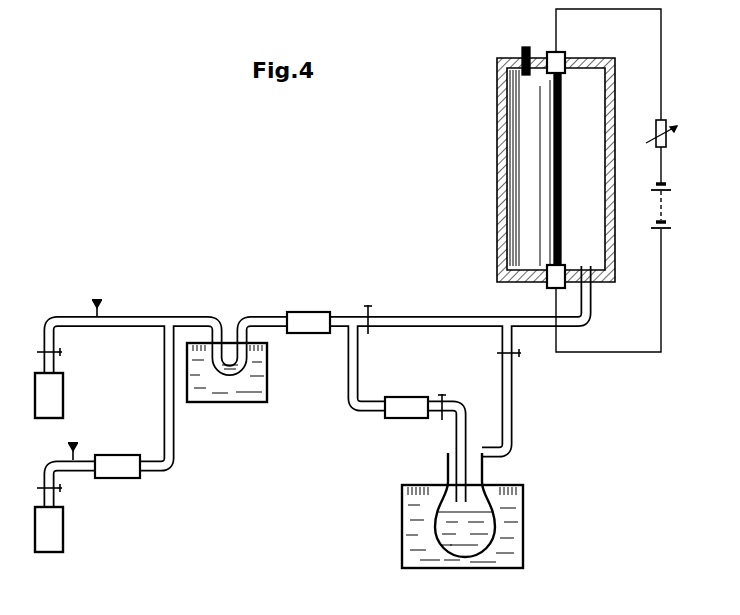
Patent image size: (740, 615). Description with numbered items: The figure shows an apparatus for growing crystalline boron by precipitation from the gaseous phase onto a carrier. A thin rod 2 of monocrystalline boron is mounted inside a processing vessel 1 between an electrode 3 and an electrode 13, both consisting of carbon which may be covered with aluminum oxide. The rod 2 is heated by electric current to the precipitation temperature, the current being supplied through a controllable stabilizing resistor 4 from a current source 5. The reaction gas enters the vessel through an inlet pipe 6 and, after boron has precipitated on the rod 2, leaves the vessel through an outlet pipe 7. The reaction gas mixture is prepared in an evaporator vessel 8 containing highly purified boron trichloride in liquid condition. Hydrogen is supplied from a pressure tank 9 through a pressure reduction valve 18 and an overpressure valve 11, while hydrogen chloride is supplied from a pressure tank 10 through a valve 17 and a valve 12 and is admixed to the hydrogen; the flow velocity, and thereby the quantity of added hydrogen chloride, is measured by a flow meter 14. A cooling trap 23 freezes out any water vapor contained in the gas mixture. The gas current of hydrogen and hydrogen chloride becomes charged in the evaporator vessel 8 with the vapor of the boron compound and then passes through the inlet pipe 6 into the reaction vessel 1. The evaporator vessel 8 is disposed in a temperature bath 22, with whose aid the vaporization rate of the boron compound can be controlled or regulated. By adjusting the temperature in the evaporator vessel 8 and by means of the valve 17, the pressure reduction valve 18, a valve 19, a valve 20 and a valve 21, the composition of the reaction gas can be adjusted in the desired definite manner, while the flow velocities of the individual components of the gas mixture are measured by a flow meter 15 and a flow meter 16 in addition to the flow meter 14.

The processing vessel 1 is at (498, 176).
The thin rod of monocrystalline boron 2 is at (561, 174).
The electrode 3 is at (553, 285).
The controllable stabilizing resistor 4 is at (660, 133).
The current source 5 is at (656, 206).
The inlet pipe 6 is at (593, 299).
The outlet pipe 7 is at (522, 52).
The evaporator vessel 8 is at (476, 502).
The pressure tank 9 is at (55, 400).
The pressure tank 10 is at (55, 533).
The overpressure valve 11 is at (100, 306).
The valve 12 is at (76, 450).
The electrode 13 is at (558, 57).
The flow meter 14 is at (125, 470).
The flow meter 15 is at (309, 318).
The flow meter 16 is at (407, 402).
The valve 17 is at (62, 490).
The pressure reduction valve 18 is at (62, 354).
The valve 19 is at (370, 302).
The valve 20 is at (444, 392).
The valve 21 is at (522, 357).
The temperature bath 22 is at (508, 540).
The cooling trap 23 is at (233, 398).